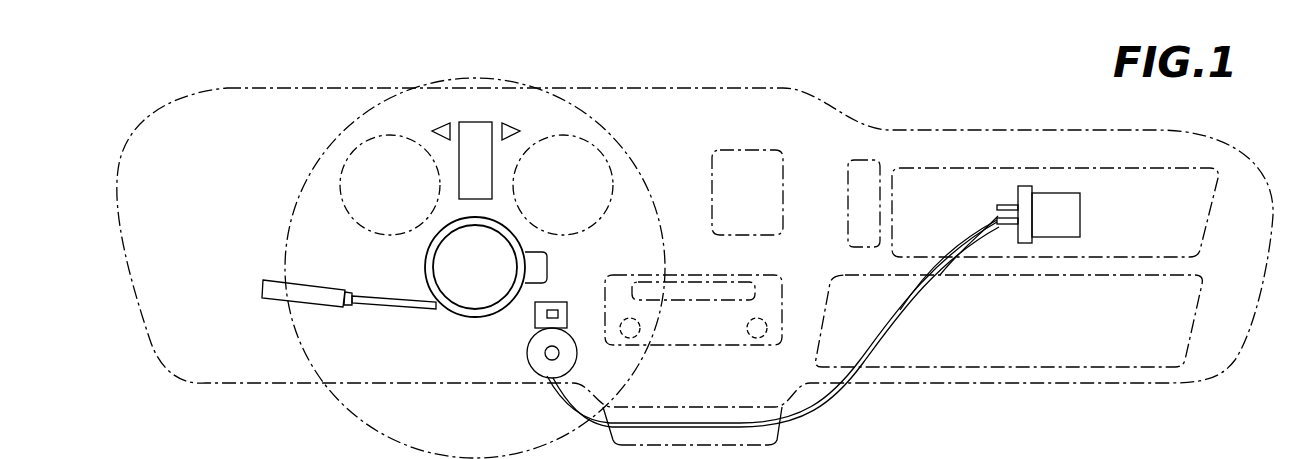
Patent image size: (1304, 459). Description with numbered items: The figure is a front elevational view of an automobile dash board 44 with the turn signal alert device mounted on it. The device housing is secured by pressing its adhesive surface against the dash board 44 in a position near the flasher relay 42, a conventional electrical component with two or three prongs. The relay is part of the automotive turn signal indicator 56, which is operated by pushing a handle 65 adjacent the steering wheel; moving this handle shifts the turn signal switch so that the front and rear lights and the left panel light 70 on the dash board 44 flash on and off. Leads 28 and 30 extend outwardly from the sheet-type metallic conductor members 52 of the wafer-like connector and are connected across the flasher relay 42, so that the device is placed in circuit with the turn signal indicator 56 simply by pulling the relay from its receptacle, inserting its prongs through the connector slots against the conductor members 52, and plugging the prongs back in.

The dash board 44 is at (246, 326).
The left panel light 70 is at (446, 119).
The turn signal indicator 56 is at (433, 332).
The handle 65 is at (277, 280).
The conductor member 52 is at (518, 458).
The lead 30 is at (990, 255).
The lead 28 is at (985, 242).
The flasher relay 42 is at (1070, 212).